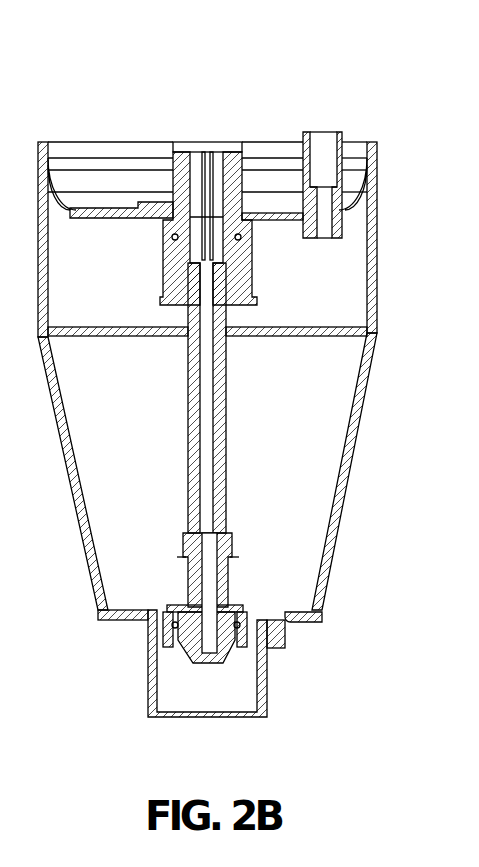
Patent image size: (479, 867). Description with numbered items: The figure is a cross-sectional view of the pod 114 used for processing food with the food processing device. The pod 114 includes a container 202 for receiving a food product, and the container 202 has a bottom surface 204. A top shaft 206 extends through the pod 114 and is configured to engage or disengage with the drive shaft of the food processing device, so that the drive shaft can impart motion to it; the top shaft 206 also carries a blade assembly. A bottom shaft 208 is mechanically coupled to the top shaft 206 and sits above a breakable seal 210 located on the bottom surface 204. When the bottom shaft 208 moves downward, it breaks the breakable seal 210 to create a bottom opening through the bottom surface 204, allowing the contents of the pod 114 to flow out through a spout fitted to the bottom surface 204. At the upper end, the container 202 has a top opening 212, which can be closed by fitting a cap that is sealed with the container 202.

The pod 114 is at (166, 79).
The container 202 is at (342, 468).
The bottom surface 204 is at (305, 627).
The top shaft 206 is at (213, 380).
The bottom shaft 208 is at (207, 590).
The breakable seal 210 is at (190, 630).
The top opening 212 is at (263, 148).